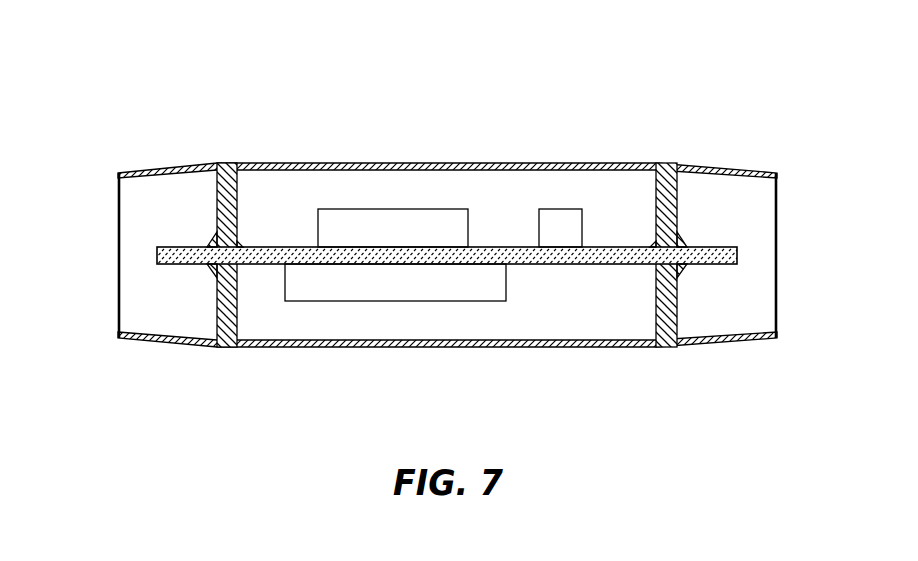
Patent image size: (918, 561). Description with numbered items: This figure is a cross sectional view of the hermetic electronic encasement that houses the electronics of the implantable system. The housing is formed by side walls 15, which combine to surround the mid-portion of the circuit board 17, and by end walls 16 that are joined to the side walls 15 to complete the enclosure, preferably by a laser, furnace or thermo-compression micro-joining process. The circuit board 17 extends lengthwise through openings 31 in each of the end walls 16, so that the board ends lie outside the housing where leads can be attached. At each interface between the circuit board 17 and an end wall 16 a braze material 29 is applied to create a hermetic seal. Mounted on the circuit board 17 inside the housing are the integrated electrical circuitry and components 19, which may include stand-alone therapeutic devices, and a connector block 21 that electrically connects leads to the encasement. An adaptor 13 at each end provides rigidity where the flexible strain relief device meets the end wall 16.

The adaptor 13 is at (167, 165).
The side walls 15 is at (400, 164).
The end walls 16 is at (227, 343).
The circuit board 17 is at (520, 263).
The integrated electrical circuitry/components 19 is at (380, 222).
The connector block 21 is at (358, 283).
The braze material 29 is at (210, 236).
The openings 31 is at (238, 240).